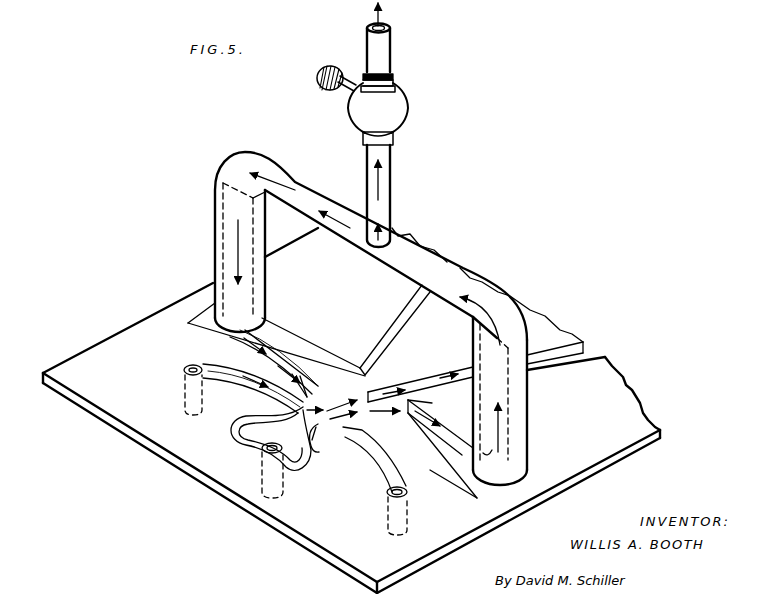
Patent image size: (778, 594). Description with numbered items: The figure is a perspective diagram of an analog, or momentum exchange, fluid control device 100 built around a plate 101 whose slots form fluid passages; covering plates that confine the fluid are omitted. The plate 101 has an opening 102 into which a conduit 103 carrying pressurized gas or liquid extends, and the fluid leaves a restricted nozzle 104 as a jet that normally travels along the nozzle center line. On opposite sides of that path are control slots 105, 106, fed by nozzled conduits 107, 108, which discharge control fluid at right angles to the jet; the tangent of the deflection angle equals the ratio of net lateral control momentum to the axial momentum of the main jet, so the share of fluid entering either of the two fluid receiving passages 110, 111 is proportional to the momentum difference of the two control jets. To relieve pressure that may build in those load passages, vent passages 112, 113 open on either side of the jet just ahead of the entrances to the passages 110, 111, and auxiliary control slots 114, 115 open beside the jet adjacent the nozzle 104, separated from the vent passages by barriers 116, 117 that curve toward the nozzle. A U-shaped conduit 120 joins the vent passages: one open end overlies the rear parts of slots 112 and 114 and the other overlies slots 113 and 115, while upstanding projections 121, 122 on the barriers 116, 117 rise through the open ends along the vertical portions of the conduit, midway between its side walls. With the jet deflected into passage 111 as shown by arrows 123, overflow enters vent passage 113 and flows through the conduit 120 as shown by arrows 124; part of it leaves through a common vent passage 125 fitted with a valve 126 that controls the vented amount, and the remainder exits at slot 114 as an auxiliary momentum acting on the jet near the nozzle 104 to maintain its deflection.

The analog fluid device 100 is at (166, 303).
The plate 101 is at (120, 410).
The opening 102 is at (250, 438).
The conduit 103 is at (283, 485).
The nozzle 104 is at (318, 434).
The control slot 105 is at (222, 376).
The control slot 106 is at (387, 478).
The nozzled conduit 107 is at (184, 368).
The nozzled conduit 108 is at (390, 495).
The fluid receiving passage 110 is at (410, 323).
The fluid receiving passage 111 is at (537, 367).
The vent passage 112 is at (292, 345).
The vent passage 113 is at (420, 413).
The auxiliary control slot 114 is at (206, 332).
The auxiliary control slot 115 is at (443, 467).
The barrier 116 is at (318, 388).
The barrier 117 is at (382, 417).
The U-shaped conduit 120 is at (512, 333).
The upstanding projection 121 is at (216, 233).
The upstanding projection 122 is at (513, 403).
The arrows 123 is at (432, 378).
The arrows 124 is at (483, 453).
The common vent passage 125 is at (392, 176).
The valve 126 is at (345, 97).